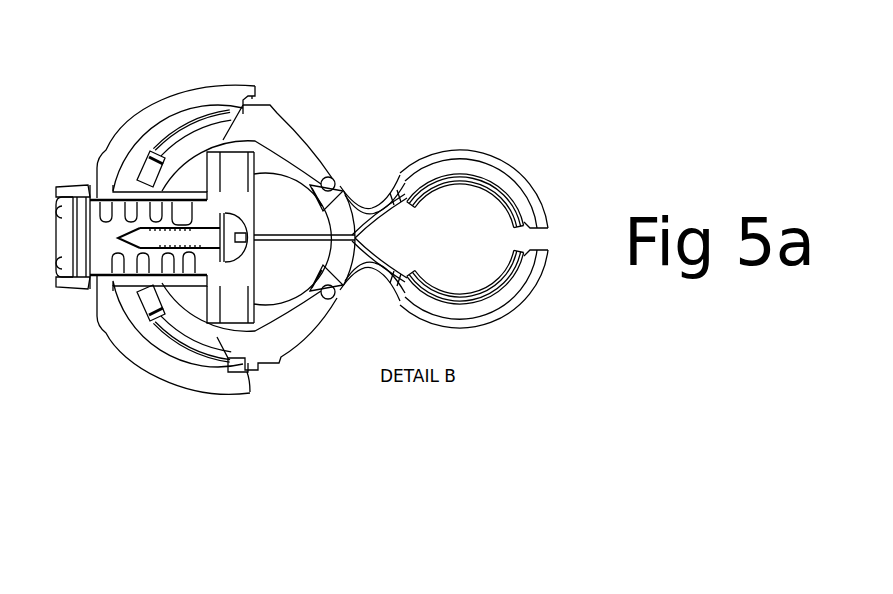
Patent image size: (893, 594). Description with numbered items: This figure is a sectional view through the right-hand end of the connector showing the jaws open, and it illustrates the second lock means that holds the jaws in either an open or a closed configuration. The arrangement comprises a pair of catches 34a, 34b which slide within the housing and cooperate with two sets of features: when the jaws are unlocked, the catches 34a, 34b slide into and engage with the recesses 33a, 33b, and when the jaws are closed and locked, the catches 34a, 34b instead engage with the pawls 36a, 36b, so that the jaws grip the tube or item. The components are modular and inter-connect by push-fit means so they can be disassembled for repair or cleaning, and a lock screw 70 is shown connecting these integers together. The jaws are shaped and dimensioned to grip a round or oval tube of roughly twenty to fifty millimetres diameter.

The recess 33a is at (148, 170).
The recess 33b is at (140, 298).
The catch 34a is at (253, 127).
The catch 34b is at (263, 357).
The pawl 36a is at (253, 98).
The pawl 36b is at (247, 372).
The lock screw 70 is at (333, 175).